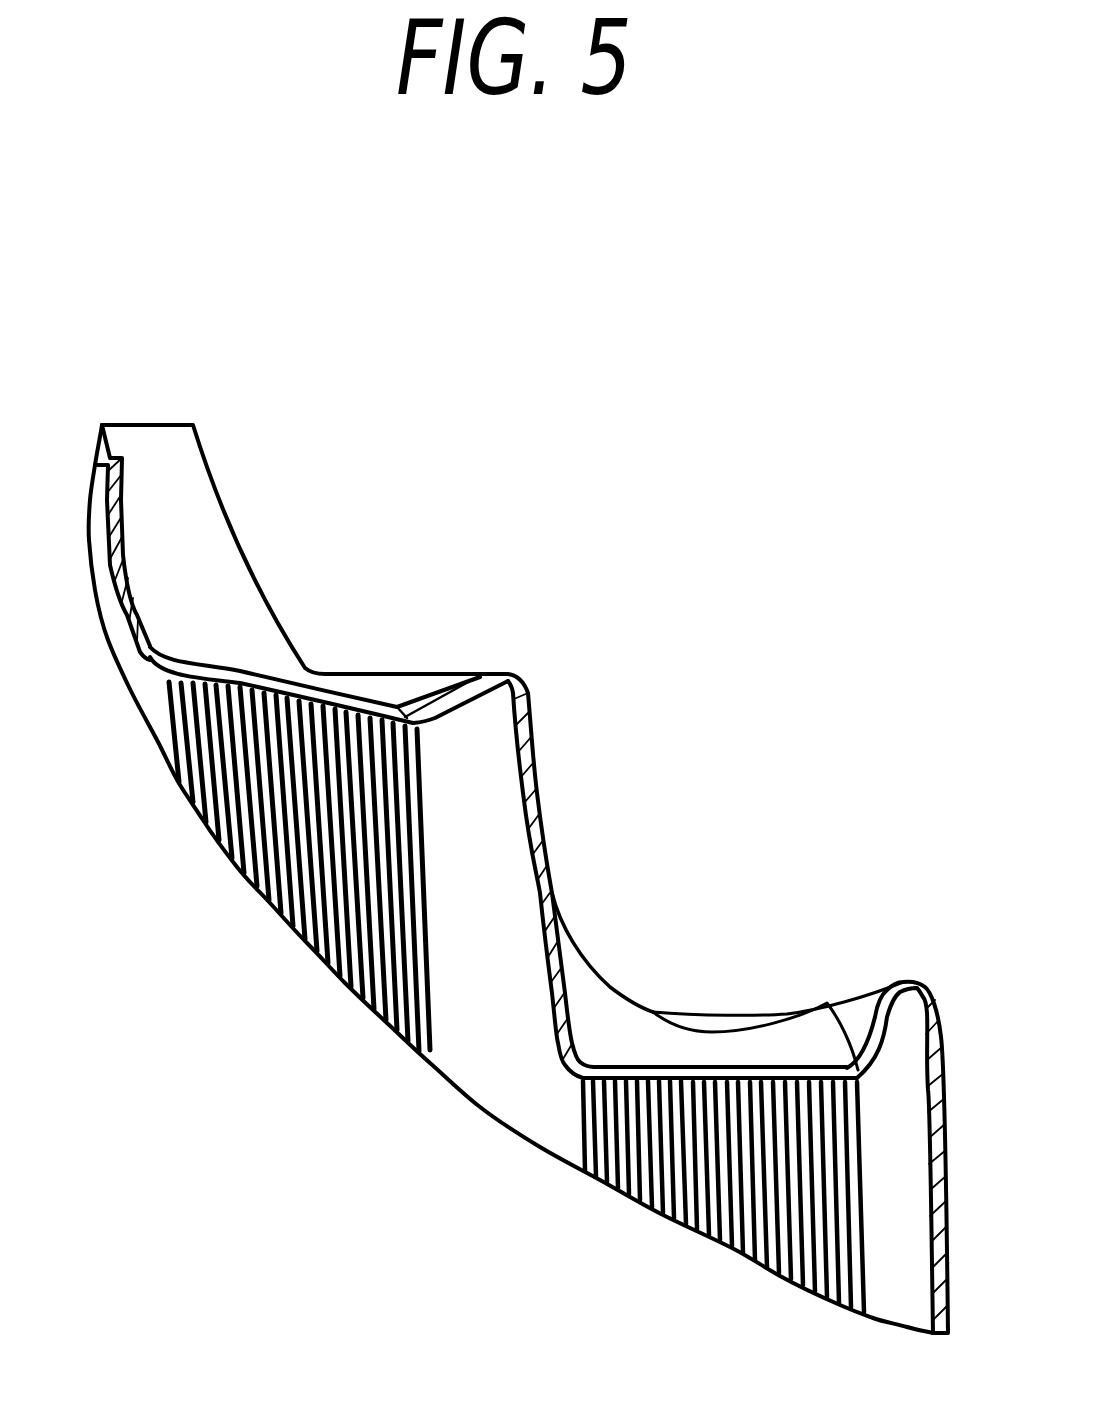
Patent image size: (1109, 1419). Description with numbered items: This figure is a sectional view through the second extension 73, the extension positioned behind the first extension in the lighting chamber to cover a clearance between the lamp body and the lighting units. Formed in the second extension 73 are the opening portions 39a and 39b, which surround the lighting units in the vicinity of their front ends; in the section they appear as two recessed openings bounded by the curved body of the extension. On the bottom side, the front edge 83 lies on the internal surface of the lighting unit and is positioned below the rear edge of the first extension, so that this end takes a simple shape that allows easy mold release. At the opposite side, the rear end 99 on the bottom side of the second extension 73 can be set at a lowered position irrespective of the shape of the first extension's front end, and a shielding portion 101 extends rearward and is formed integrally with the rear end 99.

The second extension 73 is at (525, 402).
The front edge 83 is at (681, 1226).
The opening portion 39a is at (258, 668).
The opening portion 39b is at (773, 1066).
The rear end 99 is at (840, 1004).
The shielding portion 101 is at (717, 1012).